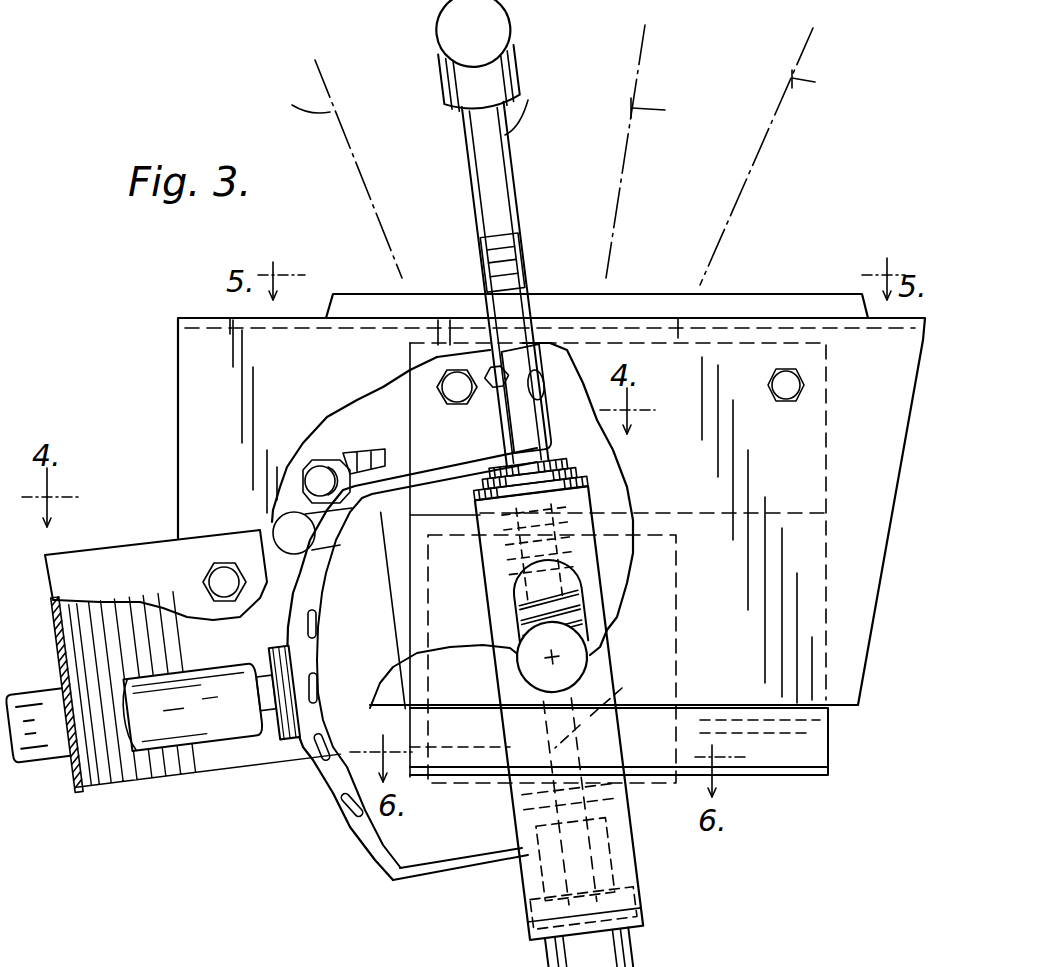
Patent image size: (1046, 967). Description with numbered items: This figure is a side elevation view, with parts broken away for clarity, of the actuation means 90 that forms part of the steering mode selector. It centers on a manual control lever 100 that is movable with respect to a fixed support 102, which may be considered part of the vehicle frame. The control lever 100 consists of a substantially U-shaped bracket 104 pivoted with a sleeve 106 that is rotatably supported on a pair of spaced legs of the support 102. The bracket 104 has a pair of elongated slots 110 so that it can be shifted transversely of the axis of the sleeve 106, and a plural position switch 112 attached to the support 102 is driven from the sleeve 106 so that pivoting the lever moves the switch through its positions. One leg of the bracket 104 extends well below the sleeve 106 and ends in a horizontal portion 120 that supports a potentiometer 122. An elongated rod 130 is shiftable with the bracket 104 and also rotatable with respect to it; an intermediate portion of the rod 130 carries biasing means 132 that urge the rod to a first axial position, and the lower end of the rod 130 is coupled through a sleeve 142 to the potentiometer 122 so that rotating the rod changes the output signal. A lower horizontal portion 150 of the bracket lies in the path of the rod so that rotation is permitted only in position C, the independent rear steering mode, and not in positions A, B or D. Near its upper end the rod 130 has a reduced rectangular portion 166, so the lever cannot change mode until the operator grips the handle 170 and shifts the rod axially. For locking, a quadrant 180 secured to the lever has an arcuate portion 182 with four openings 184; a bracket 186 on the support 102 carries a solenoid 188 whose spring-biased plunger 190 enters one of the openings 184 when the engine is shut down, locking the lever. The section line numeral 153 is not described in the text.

The actuation means 90 is at (411, 104).
The manual control lever 100 is at (541, 187).
The support 102 is at (190, 366).
The U-shaped bracket 104 is at (588, 512).
The sleeve 106 is at (520, 665).
The elongated slots 110 is at (508, 601).
The plural position switch 112 is at (652, 630).
The horizontal portion 120 is at (640, 925).
The potentiometer 122 is at (656, 965).
The elongated rod 130 is at (478, 162).
The biasing means 132 is at (578, 543).
The sleeve 142 is at (607, 873).
The lower horizontal portion 150 is at (775, 775).
The link 153 is at (613, 706).
The reduced portion 166 is at (500, 258).
The handle 170 is at (480, 30).
The quadrant 180 is at (387, 875).
The arcuate portion 182 is at (325, 790).
The openings 184 is at (320, 630).
The bracket 186 is at (108, 787).
The solenoid 188 is at (172, 735).
The plunger 190 is at (258, 720).
The position A is at (813, 85).
The position B is at (659, 117).
The position C is at (527, 108).
The position D is at (296, 105).